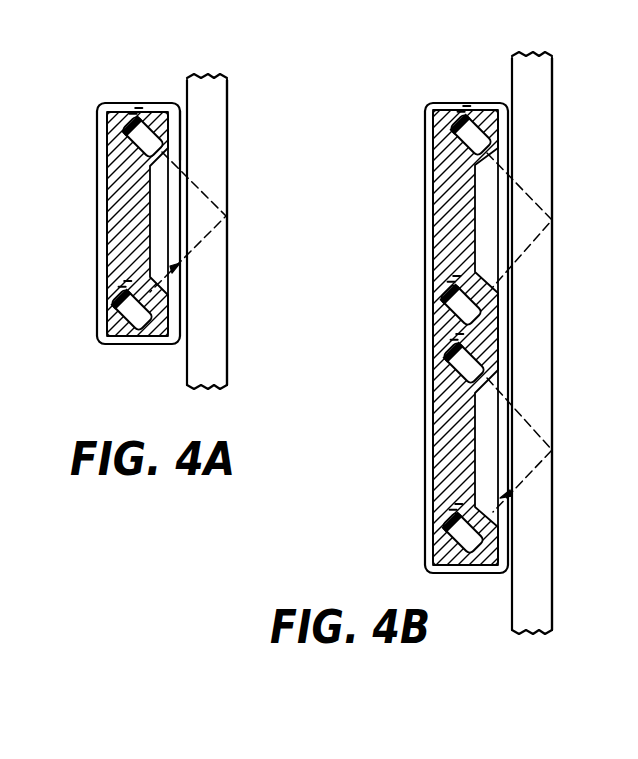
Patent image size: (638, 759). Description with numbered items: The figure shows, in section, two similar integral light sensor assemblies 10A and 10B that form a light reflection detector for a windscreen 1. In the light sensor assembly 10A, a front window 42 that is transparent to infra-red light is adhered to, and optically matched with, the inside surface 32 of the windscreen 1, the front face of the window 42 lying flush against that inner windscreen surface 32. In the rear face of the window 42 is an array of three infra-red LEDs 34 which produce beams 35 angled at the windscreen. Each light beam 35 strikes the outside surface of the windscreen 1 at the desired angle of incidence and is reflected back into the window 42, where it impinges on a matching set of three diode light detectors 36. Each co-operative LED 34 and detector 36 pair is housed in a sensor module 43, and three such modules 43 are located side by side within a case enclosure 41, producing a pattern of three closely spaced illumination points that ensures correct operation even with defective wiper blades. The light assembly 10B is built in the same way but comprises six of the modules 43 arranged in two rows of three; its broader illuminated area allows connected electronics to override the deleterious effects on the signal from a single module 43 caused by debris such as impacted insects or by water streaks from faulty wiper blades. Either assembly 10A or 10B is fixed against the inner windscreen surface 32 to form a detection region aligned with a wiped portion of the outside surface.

In FIG. 4A, the windscreen 1 is at (229, 345).
In FIG. 4B, the windscreen 1 is at (553, 126).
In FIG. 4A, the light sensor assembly 10A is at (86, 233).
In FIG. 4B, the light sensor assembly 10B is at (400, 377).
In FIG. 4A, the inside surface of the windscreen 32 is at (184, 352).
In FIG. 4B, the inside surface of the windscreen 32 is at (512, 604).
In FIG. 4A, the infra-red LED 34 is at (142, 118).
In FIG. 4B, the infra-red LED 34 is at (440, 358).
In FIG. 4A, the light beam 35 is at (197, 186).
In FIG. 4B, the light beam 35 is at (506, 266).
In FIG. 4A, the diode light detector 36 is at (114, 318).
In FIG. 4B, the diode light detector 36 is at (440, 318).
In FIG. 4A, the case enclosure 41 is at (118, 345).
In FIG. 4B, the case enclosure 41 is at (424, 103).
In FIG. 4A, the front window 42 is at (178, 128).
In FIG. 4A, the sensor module 43 is at (123, 175).
In FIG. 4B, the sensor module 43 is at (448, 197).